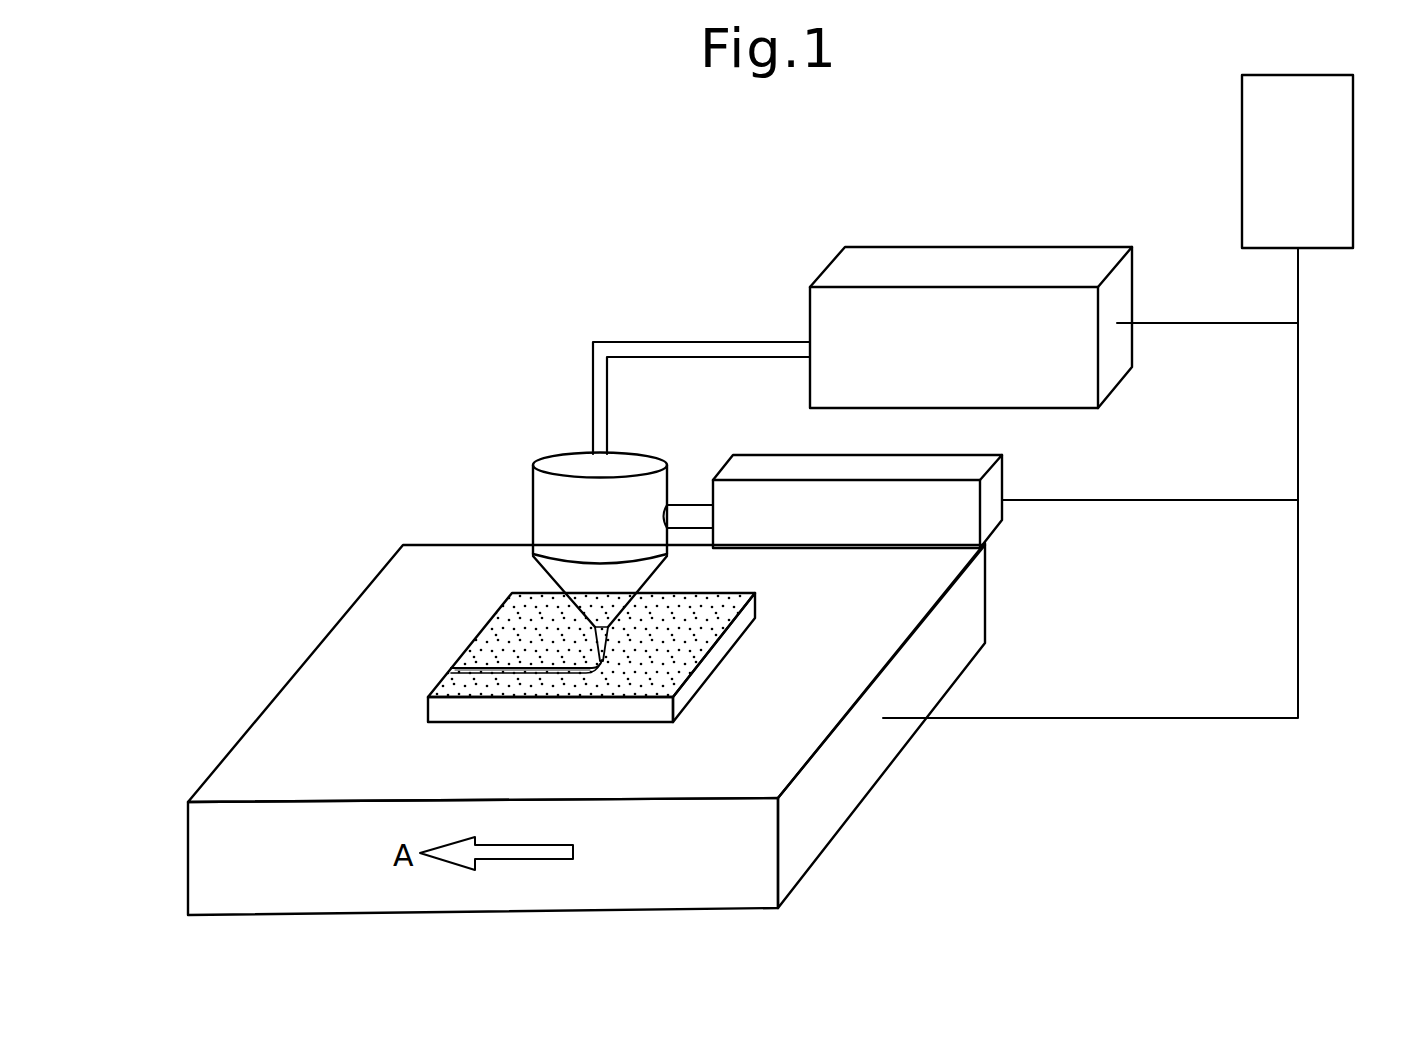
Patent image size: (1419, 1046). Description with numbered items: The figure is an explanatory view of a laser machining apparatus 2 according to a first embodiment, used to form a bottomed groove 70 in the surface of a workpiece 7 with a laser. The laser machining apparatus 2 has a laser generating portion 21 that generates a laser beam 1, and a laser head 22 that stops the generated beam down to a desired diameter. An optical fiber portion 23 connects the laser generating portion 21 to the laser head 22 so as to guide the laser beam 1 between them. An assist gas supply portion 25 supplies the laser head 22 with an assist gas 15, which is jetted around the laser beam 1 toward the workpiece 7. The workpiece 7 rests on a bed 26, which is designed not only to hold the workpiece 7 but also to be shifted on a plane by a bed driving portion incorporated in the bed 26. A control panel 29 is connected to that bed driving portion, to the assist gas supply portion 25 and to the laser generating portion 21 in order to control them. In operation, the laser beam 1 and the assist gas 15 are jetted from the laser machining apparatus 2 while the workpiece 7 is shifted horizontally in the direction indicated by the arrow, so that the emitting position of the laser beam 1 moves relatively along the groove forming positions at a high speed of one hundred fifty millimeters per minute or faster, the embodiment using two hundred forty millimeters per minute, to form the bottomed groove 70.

The laser beam 1 is at (605, 648).
The laser machining apparatus 2 is at (766, 221).
The workpiece 7 is at (505, 620).
The assist gas 15 is at (606, 630).
The laser generating portion 21 is at (924, 256).
The laser head 22 is at (552, 508).
The optical fiber portion 23 is at (647, 347).
The assist gas supply portion 25 is at (980, 458).
The bed 26 is at (848, 777).
The control panel 29 is at (1242, 142).
The bottomed groove 70 is at (478, 670).